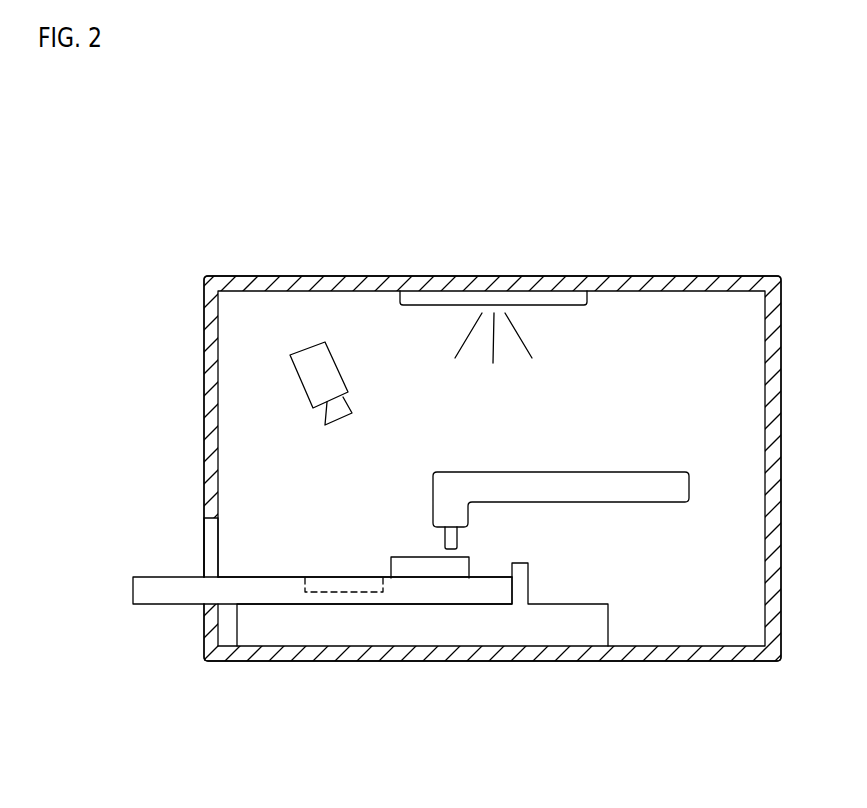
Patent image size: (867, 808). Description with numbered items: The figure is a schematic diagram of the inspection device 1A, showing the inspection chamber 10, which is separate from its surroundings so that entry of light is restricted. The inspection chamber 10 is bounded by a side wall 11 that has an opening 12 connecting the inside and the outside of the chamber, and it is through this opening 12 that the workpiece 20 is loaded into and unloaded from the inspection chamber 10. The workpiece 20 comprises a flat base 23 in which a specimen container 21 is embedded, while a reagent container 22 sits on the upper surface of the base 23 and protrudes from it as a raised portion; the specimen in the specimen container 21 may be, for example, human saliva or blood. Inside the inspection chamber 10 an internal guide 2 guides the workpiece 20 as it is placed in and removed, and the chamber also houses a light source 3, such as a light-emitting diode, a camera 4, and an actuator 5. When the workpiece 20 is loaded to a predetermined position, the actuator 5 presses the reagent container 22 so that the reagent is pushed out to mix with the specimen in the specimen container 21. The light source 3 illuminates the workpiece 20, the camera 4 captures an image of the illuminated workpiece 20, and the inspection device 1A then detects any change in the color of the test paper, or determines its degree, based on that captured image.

The inspection device 1A is at (164, 146).
The internal guide 2 is at (580, 603).
The light source 3 is at (557, 296).
The camera 4 is at (348, 378).
The actuator 5 is at (625, 472).
The inspection chamber 10 is at (727, 357).
The side wall 11 is at (207, 357).
The opening 12 is at (210, 535).
The workpiece 20 is at (161, 604).
The specimen container 21 is at (328, 578).
The reagent container 22 is at (412, 557).
The base 23 is at (273, 577).